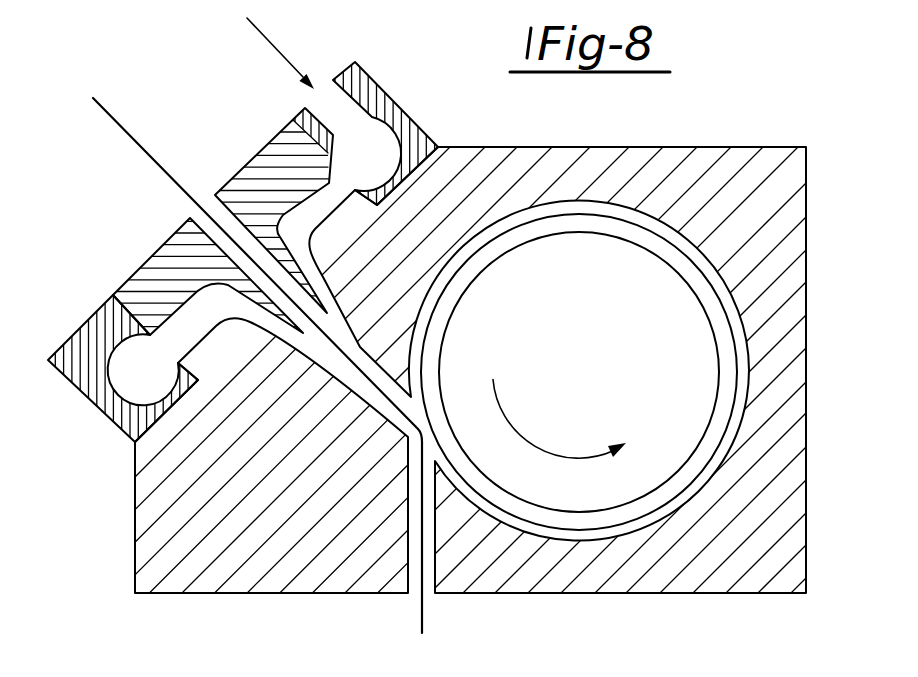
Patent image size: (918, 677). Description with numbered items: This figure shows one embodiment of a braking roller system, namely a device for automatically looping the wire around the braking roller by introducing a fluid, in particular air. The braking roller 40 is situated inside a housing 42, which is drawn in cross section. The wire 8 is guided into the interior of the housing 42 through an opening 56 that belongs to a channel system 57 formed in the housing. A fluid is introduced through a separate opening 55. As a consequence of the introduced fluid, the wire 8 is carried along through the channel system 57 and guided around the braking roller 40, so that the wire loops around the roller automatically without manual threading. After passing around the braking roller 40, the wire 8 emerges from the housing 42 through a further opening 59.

The wire 8 is at (145, 147).
The braking roller 40 is at (604, 373).
The housing 42 is at (647, 163).
The opening 55 is at (332, 105).
The opening 56 is at (213, 207).
The channel system 57 is at (393, 418).
The opening 59 is at (428, 588).